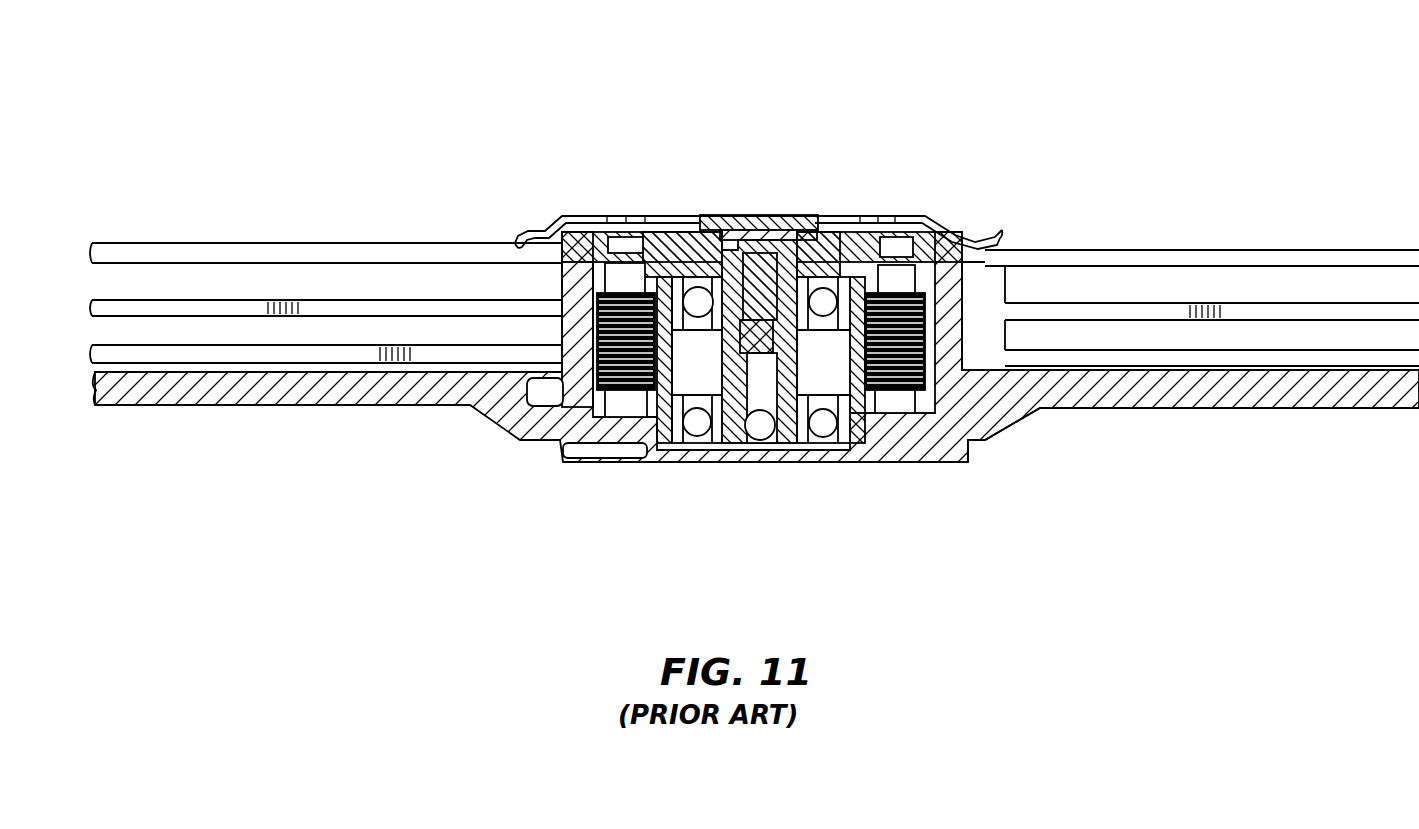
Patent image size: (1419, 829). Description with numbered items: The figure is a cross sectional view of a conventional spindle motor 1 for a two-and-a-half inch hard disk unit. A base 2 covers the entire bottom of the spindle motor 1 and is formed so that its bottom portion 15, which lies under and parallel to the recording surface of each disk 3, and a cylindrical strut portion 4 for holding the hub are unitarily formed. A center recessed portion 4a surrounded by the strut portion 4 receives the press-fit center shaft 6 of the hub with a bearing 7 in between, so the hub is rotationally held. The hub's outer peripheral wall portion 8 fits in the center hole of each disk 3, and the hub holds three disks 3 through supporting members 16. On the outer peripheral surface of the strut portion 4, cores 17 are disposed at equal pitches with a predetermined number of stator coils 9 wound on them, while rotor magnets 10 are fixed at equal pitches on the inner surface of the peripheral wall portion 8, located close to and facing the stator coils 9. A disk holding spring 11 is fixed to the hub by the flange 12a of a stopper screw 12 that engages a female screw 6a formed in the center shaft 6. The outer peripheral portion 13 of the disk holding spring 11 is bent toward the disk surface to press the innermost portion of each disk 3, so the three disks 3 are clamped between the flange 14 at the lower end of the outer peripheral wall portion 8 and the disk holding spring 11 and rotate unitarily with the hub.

The spindle motor 1 is at (992, 98).
The base 2 is at (892, 462).
The disk 3 is at (232, 243).
The cylindrical strut portion 4 is at (652, 395).
The center recessed portion 4a is at (668, 420).
The center shaft 6 is at (784, 458).
The female screw 6a is at (760, 232).
The bearing 7 is at (703, 440).
The outer peripheral wall portion 8 is at (1005, 337).
The stator coils 9 is at (645, 355).
The rotor magnets 10 is at (520, 233).
The disk holding spring 11 is at (930, 225).
The stopper screw 12 is at (786, 215).
The flange 12a is at (810, 215).
The outer peripheral portion 13 is at (547, 232).
The flange 14 is at (980, 430).
The bottom portion 15 is at (268, 405).
The supporting member 16 is at (560, 298).
The cores 17 is at (555, 422).